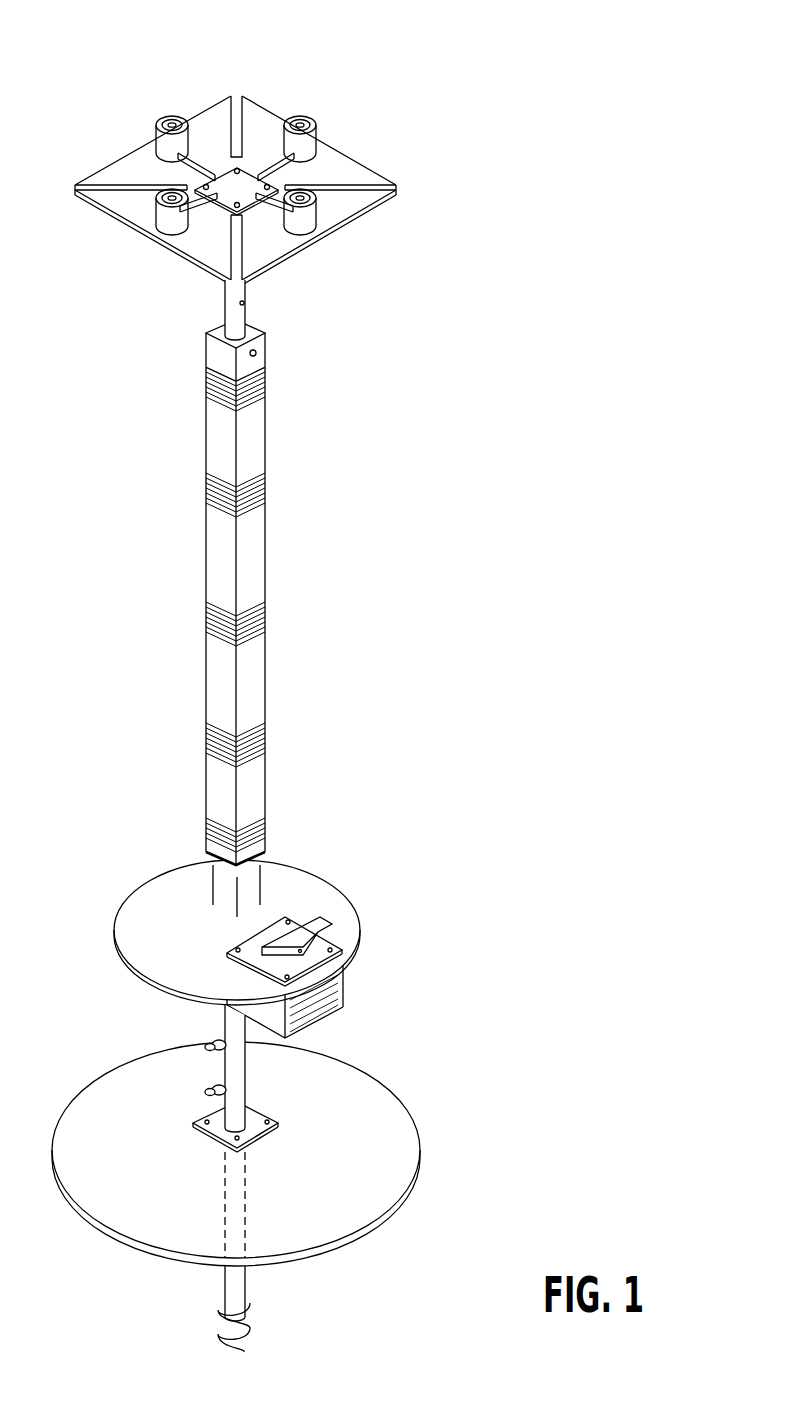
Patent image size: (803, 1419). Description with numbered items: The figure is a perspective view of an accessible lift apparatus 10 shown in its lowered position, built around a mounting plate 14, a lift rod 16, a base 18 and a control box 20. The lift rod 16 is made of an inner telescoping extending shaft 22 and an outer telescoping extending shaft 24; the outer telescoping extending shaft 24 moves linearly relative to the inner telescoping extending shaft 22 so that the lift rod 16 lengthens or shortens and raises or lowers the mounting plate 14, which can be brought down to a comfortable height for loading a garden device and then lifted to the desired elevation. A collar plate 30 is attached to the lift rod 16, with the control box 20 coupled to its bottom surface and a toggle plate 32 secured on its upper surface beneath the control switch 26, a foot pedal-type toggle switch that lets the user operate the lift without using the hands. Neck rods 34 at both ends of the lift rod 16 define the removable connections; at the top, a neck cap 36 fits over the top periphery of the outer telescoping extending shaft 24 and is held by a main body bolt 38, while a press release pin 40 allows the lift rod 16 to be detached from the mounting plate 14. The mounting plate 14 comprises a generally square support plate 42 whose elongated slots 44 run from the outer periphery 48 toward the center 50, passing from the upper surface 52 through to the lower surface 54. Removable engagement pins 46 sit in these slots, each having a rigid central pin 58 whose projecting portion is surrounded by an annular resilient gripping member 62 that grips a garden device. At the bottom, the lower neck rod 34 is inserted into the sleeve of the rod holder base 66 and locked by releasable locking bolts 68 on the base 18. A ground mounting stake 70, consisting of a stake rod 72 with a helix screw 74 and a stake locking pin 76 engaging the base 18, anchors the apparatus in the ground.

The accessible lift apparatus 10 is at (479, 21).
The mounting plate 14 is at (387, 98).
The lift rod 16 is at (207, 644).
The base 18 is at (106, 1074).
The control box 20 is at (343, 990).
The inner telescoping extending shaft 22 is at (210, 880).
The outer telescoping extending shaft 24 is at (205, 703).
The control switch 26 is at (318, 927).
The collar plate 30 is at (131, 884).
The toggle plate 32 is at (292, 920).
The neck rod 34 is at (237, 310).
The neck cap 36 is at (237, 622).
The main body bolt 38 is at (258, 355).
The press release pin 40 is at (245, 303).
The support plate 42 is at (249, 96).
The elongated slots 44 is at (373, 186).
The removable engagement pins 46 is at (240, 160).
The outer periphery 48 is at (300, 250).
The center 50 is at (228, 187).
The upper surface 52 is at (223, 108).
The lower surface 54 is at (195, 266).
The rigid central pin 58 is at (300, 118).
The annular resilient gripping member 62 is at (316, 134).
The rod holder base 66 is at (247, 1070).
The releasable locking bolts 68 is at (212, 1040).
The ground mounting stake 70 is at (238, 1252).
The stake rod 72 is at (247, 1290).
The helix screw 74 is at (252, 1328).
The stake locking pin 76 is at (245, 1108).